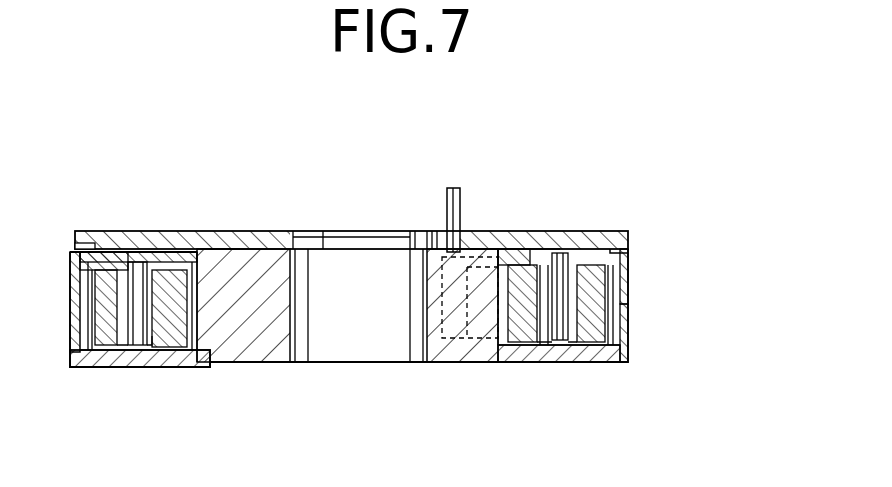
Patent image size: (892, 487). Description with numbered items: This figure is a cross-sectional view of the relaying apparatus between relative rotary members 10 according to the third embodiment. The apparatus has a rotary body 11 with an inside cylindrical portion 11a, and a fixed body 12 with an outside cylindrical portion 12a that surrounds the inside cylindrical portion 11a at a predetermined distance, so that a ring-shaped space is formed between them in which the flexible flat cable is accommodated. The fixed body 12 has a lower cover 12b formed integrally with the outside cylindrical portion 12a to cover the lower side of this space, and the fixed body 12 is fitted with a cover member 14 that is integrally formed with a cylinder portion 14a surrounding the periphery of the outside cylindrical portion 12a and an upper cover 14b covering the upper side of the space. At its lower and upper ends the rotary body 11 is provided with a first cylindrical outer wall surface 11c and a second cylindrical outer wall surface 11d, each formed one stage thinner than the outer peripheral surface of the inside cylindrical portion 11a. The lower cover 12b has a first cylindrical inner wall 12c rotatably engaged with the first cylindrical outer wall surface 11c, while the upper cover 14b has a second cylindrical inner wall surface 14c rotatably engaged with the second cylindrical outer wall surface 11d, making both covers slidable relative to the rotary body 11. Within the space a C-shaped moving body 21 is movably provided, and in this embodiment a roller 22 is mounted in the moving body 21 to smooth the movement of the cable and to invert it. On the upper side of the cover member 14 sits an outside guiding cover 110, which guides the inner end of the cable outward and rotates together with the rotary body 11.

The relaying apparatus between relative rotary members 10 is at (640, 212).
The rotary body 11 is at (289, 238).
The inside cylindrical portion 11a is at (170, 237).
The first cylindrical outer wall surface 11c is at (200, 367).
The second cylindrical outer wall surface 11d is at (195, 237).
The fixed body 12 is at (602, 363).
The outside cylindrical portion 12a is at (630, 327).
The lower cover 12b is at (552, 362).
The first cylindrical inner wall 12c is at (217, 362).
The cover member 14 is at (630, 250).
The cylinder portion 14a is at (630, 288).
The upper cover 14b is at (547, 238).
The second cylindrical inner wall surface 14c is at (218, 240).
The moving body 21 is at (593, 232).
The roller 22 is at (523, 362).
The outside guiding cover 110 is at (482, 230).